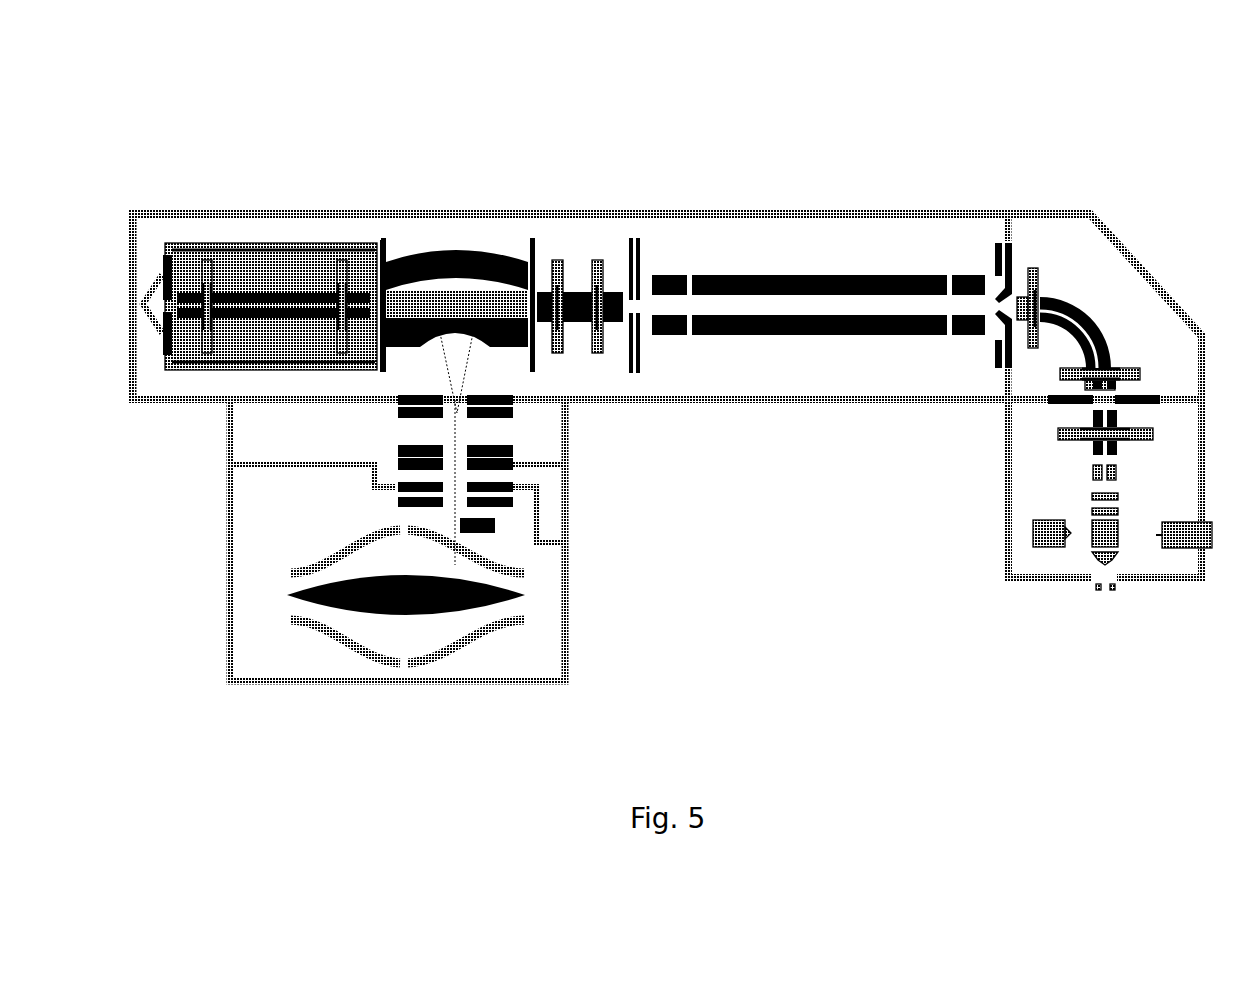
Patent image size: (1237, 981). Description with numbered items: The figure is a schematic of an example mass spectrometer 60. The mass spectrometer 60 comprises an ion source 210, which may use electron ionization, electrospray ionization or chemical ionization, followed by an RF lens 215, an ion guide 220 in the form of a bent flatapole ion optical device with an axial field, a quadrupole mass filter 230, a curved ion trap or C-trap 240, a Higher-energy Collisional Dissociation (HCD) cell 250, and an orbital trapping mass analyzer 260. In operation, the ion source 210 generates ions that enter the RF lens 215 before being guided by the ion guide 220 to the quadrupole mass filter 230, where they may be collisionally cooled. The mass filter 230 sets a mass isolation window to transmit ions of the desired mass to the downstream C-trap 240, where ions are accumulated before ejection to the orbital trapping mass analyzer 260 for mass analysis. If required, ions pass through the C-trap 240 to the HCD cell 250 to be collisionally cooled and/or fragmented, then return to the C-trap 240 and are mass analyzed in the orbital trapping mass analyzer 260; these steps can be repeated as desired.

The mass spectrometer 60 is at (216, 148).
The ion source 210 is at (1103, 532).
The RF lens 215 is at (1060, 432).
The ion guide 220 is at (1088, 322).
The quadrupole mass filter 230 is at (802, 283).
The curved ion trap (C-trap) 240 is at (458, 265).
The Higher-energy Collisional Dissociation (HCD) cell 250 is at (283, 276).
The orbital trapping mass analyzer 260 is at (468, 598).